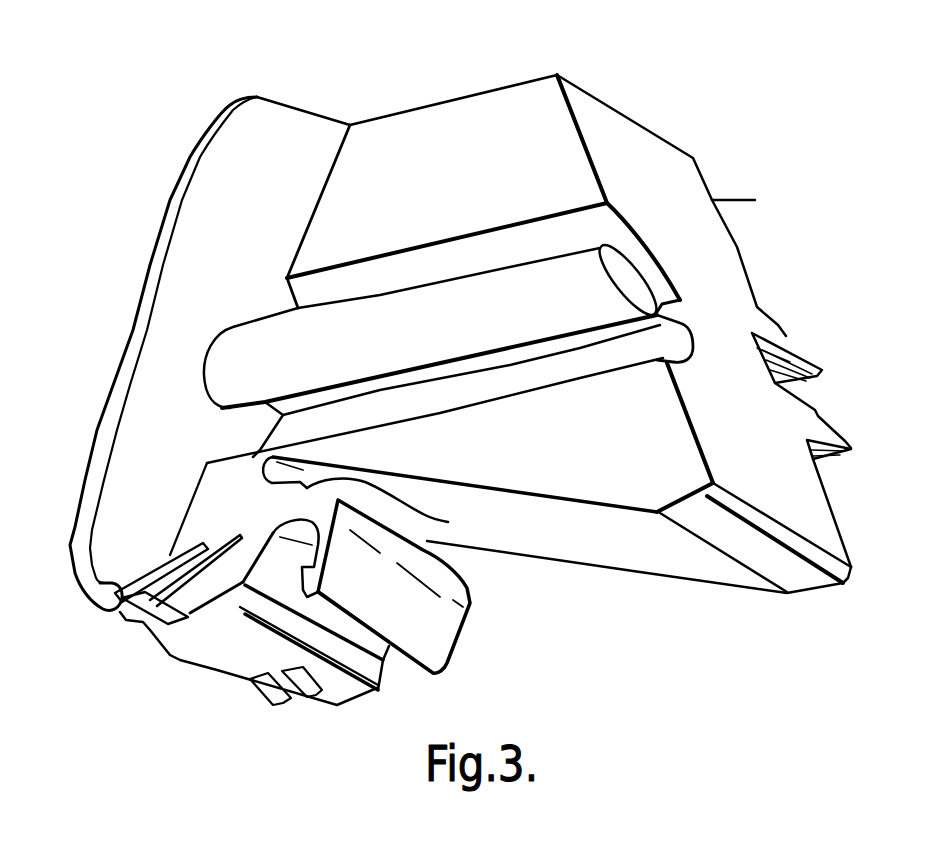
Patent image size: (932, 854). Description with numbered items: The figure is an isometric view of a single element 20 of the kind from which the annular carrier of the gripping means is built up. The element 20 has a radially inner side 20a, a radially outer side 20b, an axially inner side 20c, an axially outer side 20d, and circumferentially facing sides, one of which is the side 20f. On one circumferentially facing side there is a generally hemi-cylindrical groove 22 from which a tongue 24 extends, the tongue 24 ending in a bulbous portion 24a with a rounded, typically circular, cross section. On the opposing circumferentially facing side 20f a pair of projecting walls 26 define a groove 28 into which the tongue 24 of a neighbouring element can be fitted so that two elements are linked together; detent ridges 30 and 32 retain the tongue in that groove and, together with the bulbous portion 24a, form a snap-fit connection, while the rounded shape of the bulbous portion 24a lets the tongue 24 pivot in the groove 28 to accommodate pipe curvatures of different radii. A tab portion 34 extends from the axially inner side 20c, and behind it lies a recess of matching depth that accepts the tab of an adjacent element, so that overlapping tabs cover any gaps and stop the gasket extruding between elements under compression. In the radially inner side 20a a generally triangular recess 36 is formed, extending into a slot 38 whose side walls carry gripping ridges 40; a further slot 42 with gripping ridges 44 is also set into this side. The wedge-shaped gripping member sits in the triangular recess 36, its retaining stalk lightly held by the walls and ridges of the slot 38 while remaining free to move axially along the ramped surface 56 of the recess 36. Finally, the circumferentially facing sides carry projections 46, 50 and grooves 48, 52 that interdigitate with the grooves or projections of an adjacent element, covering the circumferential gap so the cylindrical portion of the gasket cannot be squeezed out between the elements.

The element 20 is at (716, 240).
The radially inner side 20a is at (567, 83).
The radially outer side 20b is at (405, 123).
The axially inner side 20c is at (127, 308).
The axially outer side 20d is at (737, 298).
The circumferentially facing side 20f is at (755, 200).
The hemi-cylindrical groove 22 is at (623, 240).
The tongue 24 is at (670, 303).
The bulbous portion 24a is at (220, 383).
The projecting walls 26 is at (840, 458).
The groove 28 is at (813, 392).
The detent ridge 30 is at (800, 362).
The detent ridge 32 is at (788, 355).
The tab portion 34 is at (197, 237).
The generally triangular recess 36 is at (510, 570).
The slot 38 is at (352, 487).
The gripping ridges 40 is at (303, 463).
The slot 42 is at (280, 575).
The gripping ridges 44 is at (283, 530).
The projection 46 is at (95, 587).
The groove 48 is at (327, 692).
The projection 50 is at (167, 557).
The groove 52 is at (282, 697).
The ramped surface 56 is at (675, 555).